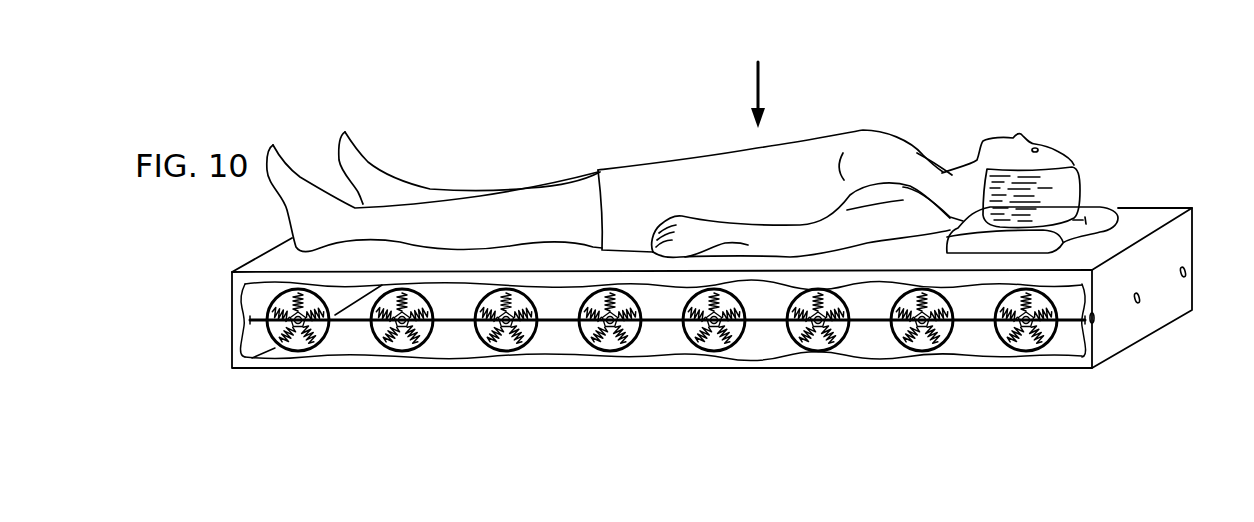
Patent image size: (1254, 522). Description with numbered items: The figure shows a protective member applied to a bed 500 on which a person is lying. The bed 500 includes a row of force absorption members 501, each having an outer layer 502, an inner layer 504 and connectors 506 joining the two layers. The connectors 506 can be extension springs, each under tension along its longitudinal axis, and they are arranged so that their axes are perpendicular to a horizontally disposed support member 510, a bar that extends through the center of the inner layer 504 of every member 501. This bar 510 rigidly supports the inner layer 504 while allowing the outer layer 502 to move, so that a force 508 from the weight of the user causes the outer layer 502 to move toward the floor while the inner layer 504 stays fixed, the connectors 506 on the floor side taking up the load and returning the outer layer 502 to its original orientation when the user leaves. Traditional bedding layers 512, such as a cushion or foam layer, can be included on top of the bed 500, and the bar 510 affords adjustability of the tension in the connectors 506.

The bed 500 is at (990, 69).
The force absorption member 501 is at (255, 300).
The outer layer 502 is at (270, 336).
The inner layer 504 is at (328, 328).
The connectors 506 is at (281, 286).
The force 508 is at (759, 90).
The support member 510 is at (1093, 318).
The traditional bedding layers 512 is at (1148, 215).